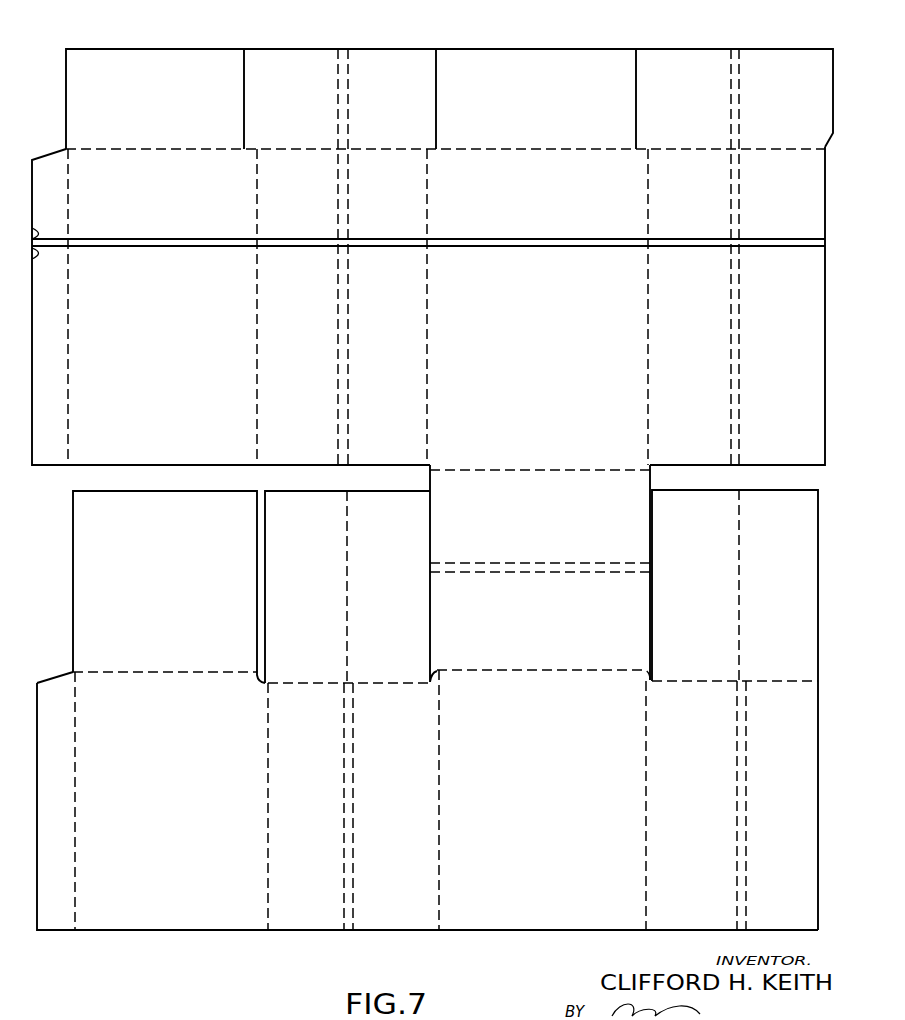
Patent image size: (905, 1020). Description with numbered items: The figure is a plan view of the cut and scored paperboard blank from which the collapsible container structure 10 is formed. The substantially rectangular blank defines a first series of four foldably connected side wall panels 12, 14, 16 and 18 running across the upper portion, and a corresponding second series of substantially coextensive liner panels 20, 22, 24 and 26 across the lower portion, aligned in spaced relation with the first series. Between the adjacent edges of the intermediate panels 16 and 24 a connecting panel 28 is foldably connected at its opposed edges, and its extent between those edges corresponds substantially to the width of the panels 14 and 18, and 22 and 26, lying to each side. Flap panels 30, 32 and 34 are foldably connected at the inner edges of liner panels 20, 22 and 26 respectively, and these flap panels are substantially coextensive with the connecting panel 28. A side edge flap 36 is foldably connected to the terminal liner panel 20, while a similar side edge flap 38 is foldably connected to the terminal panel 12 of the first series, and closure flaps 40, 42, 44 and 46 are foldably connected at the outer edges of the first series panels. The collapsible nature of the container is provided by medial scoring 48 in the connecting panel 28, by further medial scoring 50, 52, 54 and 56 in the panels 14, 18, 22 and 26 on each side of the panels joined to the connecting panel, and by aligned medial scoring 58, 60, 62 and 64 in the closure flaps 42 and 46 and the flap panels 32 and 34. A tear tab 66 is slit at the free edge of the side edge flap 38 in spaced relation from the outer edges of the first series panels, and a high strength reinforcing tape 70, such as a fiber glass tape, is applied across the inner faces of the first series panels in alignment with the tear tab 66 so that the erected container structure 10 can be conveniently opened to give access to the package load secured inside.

The container structure 10 is at (666, 46).
The side wall panel 12 is at (172, 356).
The side wall panel 14 is at (312, 369).
The side wall panel 16 is at (548, 369).
The side wall panel 18 is at (700, 369).
The liner panel 20 is at (175, 816).
The liner panel 22 is at (318, 826).
The liner panel 24 is at (550, 822).
The liner panel 26 is at (703, 822).
The connecting panel 28 is at (552, 554).
The flap panel 30 is at (178, 596).
The flap panel 32 is at (318, 613).
The flap panel 34 is at (706, 612).
The side edge flap 36 is at (48, 678).
The side edge flap 38 is at (43, 470).
The closure flap 40 is at (170, 117).
The closure flap 42 is at (303, 117).
The closure flap 44 is at (543, 119).
The closure flap 46 is at (696, 119).
The medial scoring 48 is at (557, 574).
The medial scoring 50 is at (348, 363).
The medial scoring 52 is at (739, 360).
The medial scoring 54 is at (354, 823).
The medial scoring 56 is at (747, 862).
The medial scoring 58 is at (348, 98).
The medial scoring 60 is at (739, 95).
The medial scoring 62 is at (348, 615).
The medial scoring 64 is at (740, 596).
The tear tab 66 is at (37, 258).
The reinforcing tape 70 is at (197, 240).